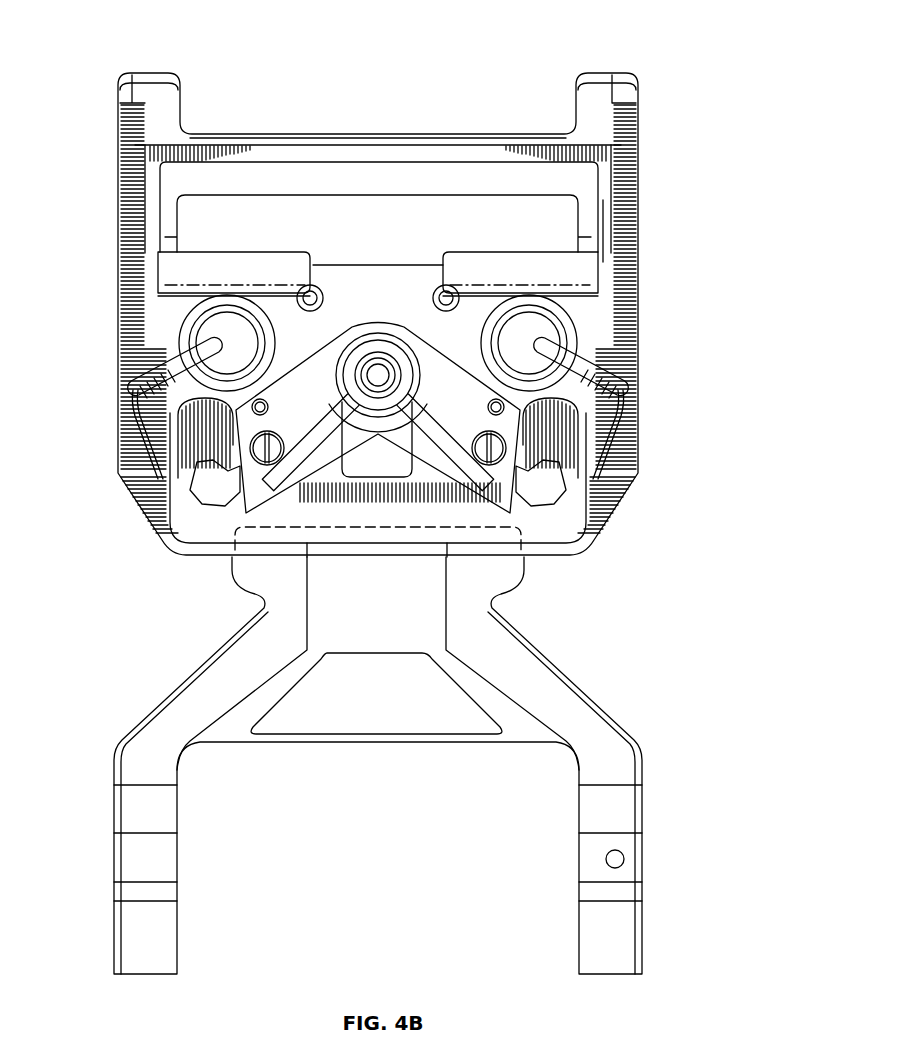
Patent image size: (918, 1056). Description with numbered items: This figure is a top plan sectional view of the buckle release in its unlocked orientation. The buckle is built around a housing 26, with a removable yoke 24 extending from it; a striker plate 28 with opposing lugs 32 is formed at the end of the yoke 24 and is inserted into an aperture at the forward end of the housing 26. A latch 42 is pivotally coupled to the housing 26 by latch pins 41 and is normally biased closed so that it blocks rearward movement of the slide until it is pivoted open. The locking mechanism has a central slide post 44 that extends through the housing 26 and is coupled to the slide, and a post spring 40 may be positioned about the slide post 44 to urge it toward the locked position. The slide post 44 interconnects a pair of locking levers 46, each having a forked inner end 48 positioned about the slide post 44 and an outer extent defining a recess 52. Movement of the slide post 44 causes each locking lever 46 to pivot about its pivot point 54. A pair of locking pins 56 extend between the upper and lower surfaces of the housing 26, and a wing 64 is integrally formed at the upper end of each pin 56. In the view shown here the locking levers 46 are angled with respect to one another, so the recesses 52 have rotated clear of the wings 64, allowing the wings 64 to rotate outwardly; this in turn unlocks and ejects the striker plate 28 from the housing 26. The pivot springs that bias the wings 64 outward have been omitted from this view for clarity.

The yoke 24 is at (416, 765).
The housing 26 is at (634, 93).
The striker plate 28 is at (372, 704).
The lugs 32 is at (237, 591).
The post spring 40 is at (371, 312).
The latch pins 41 is at (195, 262).
The latch 42 is at (607, 185).
The slide post 44 is at (378, 378).
The locking levers 46 is at (197, 478).
The forked inner end 48 is at (352, 335).
The recess 52 is at (230, 472).
The pivot point 54 is at (277, 527).
The locking pins 56 is at (222, 323).
The wing 64 is at (124, 390).